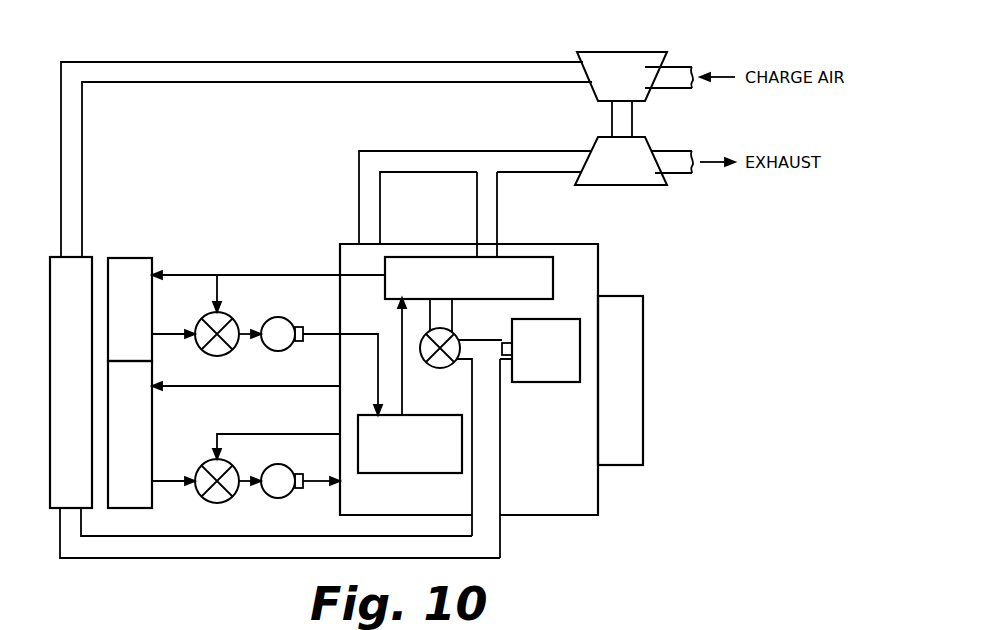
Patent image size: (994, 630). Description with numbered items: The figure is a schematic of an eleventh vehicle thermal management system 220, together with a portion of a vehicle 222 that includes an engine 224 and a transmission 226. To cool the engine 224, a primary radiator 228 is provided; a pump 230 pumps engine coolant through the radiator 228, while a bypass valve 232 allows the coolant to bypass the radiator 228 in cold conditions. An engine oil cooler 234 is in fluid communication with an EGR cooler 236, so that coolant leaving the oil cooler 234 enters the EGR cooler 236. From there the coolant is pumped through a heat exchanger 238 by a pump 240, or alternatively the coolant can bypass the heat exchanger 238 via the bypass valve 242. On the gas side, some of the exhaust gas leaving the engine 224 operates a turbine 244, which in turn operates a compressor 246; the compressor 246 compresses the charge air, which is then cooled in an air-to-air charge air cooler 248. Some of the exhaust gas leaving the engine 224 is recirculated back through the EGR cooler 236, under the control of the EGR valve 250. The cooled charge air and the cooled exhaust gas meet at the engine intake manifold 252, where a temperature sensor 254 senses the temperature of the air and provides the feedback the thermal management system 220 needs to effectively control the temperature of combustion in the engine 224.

The vehicle thermal management system 220 is at (763, 500).
The vehicle 222 is at (605, 562).
The engine 224 is at (512, 516).
The transmission 226 is at (625, 466).
The primary radiator 228 is at (152, 418).
The pump 230 is at (278, 464).
The bypass valve 232 is at (224, 462).
The engine oil cooler 234 is at (390, 474).
The EGR cooler 236 is at (553, 277).
The heat exchanger 238 is at (133, 258).
The pump 240 is at (278, 317).
The bypass valve 242 is at (224, 314).
The turbine 244 is at (630, 186).
The compressor 246 is at (630, 52).
The air-to-air charge air cooler 248 is at (50, 298).
The EGR valve 250 is at (443, 368).
The engine intake manifold 252 is at (540, 383).
The temperature sensor 254 is at (500, 349).